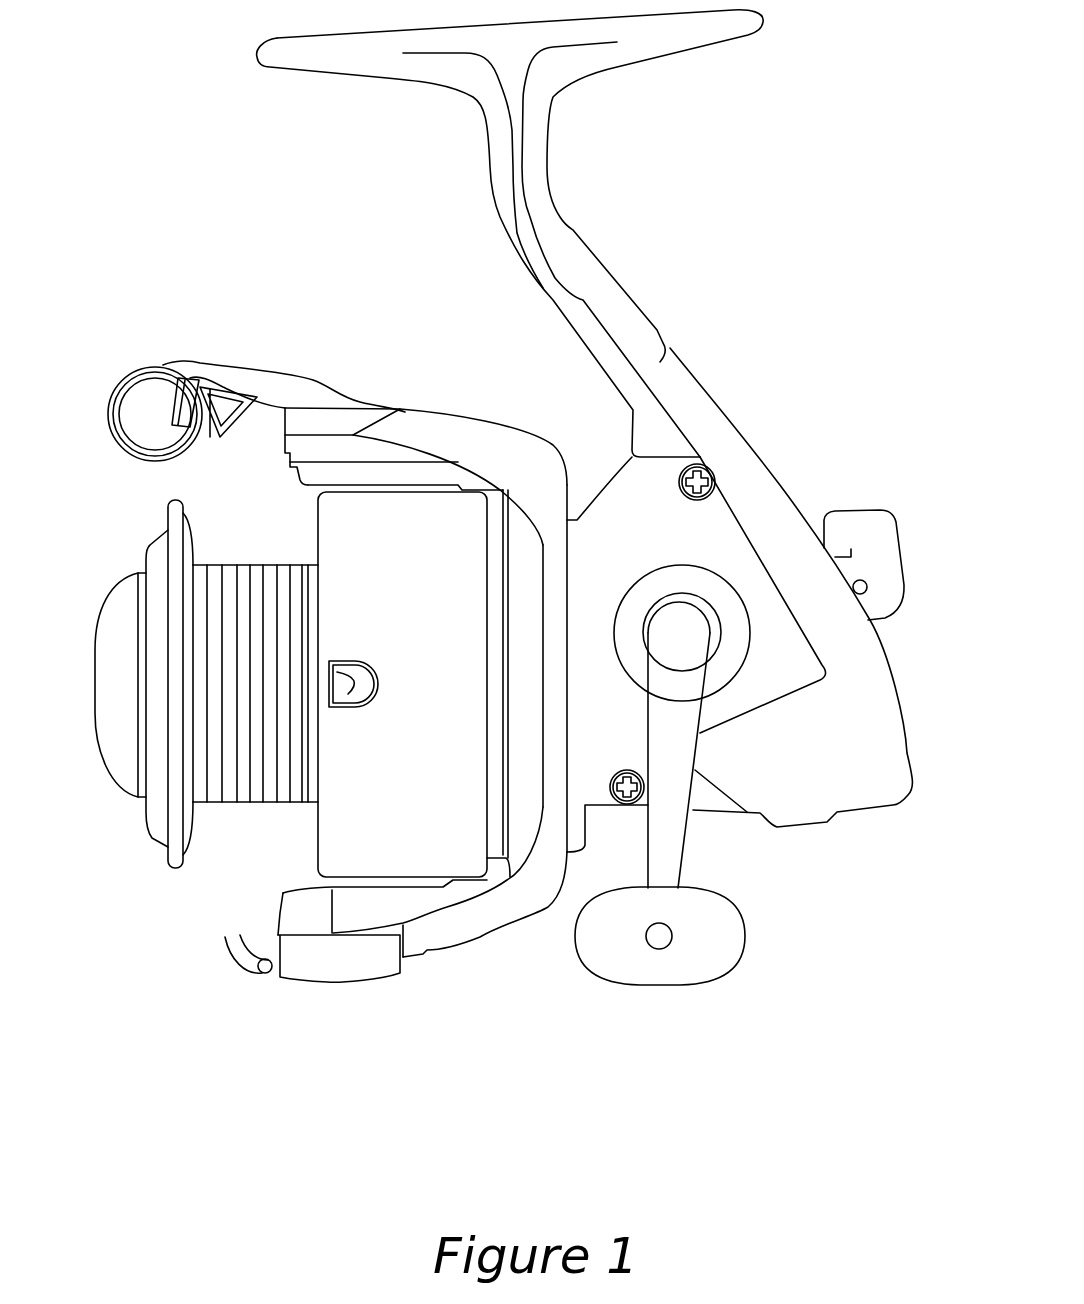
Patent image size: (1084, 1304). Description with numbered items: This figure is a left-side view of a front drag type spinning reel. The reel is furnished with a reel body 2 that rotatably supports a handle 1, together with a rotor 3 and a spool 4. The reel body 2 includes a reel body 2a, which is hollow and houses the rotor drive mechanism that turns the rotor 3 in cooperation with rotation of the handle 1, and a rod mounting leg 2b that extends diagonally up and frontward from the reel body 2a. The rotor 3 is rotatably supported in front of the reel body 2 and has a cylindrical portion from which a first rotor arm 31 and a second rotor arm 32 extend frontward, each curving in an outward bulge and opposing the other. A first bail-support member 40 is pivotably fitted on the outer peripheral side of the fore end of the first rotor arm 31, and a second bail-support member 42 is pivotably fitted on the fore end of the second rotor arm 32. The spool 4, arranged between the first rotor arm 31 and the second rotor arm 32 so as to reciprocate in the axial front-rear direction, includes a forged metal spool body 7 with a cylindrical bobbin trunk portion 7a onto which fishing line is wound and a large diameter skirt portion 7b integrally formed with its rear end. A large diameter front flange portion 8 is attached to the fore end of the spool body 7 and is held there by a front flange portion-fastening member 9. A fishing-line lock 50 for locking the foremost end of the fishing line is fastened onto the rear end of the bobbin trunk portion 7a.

The handle 1 is at (693, 855).
The reel body 2 is at (648, 297).
The reel body 2a is at (730, 530).
The rod mounting leg 2b is at (563, 246).
The rotor 3 is at (500, 907).
The spool 4 is at (213, 823).
The spool body 7 is at (240, 815).
The bobbin trunk portion 7a is at (243, 580).
The skirt portion 7b is at (383, 493).
The front flange portion 8 is at (175, 873).
The front flange portion-fastening member 9 is at (157, 840).
The first rotor arm 31 is at (427, 424).
The second rotor arm 32 is at (442, 927).
The first bail-support member 40 is at (313, 390).
The second bail-support member 42 is at (327, 970).
The fishing-line lock 50 is at (345, 697).